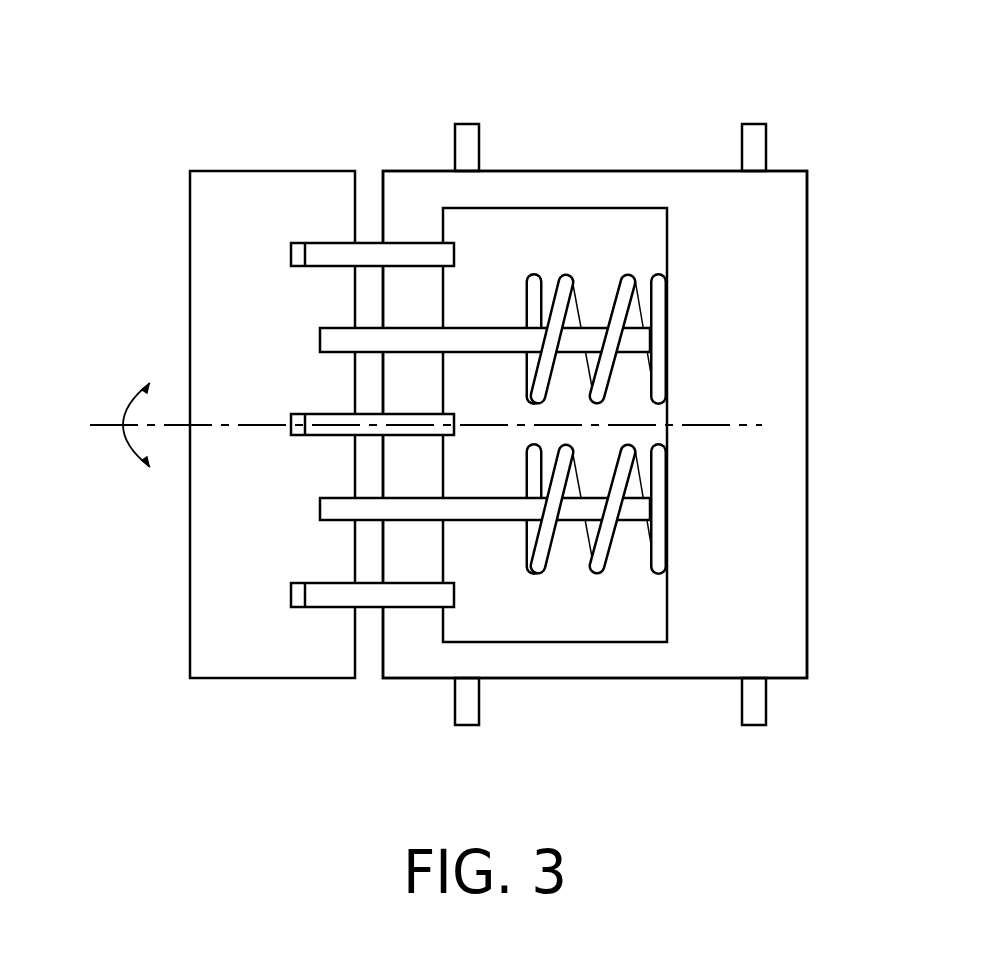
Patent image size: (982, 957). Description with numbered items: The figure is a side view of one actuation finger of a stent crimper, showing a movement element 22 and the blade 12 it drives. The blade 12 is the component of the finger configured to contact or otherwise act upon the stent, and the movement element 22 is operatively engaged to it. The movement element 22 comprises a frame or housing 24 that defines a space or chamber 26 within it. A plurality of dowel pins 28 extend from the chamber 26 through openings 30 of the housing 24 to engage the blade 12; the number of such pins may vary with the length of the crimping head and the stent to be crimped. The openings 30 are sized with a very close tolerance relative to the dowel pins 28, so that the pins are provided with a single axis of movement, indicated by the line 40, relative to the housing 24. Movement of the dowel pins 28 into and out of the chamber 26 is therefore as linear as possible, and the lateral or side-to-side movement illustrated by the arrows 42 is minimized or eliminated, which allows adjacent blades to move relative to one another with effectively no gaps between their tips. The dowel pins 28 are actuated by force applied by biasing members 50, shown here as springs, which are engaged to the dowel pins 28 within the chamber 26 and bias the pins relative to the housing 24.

The blade 12 is at (268, 678).
The movement element 22 is at (657, 171).
The housing 24 is at (807, 480).
The chamber 26 is at (657, 603).
The dowel pins 28 is at (472, 513).
The openings 30 is at (427, 243).
The axis of movement 40 is at (697, 427).
The lateral movement 42 is at (124, 412).
The biasing members 50 is at (489, 351).